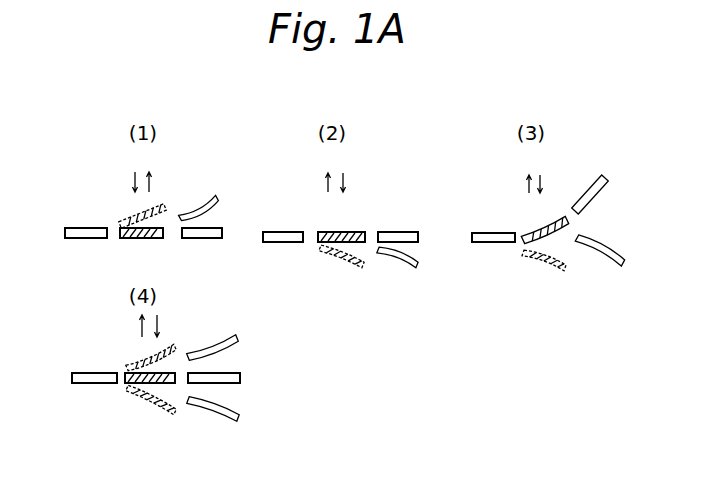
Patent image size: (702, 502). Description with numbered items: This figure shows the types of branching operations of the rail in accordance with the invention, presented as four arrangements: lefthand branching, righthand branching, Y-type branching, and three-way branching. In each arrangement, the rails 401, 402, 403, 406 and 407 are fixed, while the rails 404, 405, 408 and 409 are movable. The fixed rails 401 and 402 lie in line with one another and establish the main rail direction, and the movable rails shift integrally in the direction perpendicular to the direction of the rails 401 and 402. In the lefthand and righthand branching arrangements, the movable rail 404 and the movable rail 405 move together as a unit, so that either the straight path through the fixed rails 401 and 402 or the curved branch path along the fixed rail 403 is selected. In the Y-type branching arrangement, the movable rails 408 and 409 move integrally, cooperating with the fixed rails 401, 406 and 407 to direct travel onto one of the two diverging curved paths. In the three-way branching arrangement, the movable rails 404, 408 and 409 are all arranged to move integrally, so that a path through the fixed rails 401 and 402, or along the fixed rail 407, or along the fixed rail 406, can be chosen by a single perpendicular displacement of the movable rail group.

The fixed rail 401 is at (73, 228).
The fixed rail 402 is at (205, 240).
The fixed rail 403 is at (202, 201).
The movable rail 404 is at (137, 240).
The movable rail 405 is at (127, 218).
The fixed rail 406 is at (602, 256).
The fixed rail 407 is at (588, 191).
The movable rail 408 is at (537, 266).
The movable rail 409 is at (543, 229).